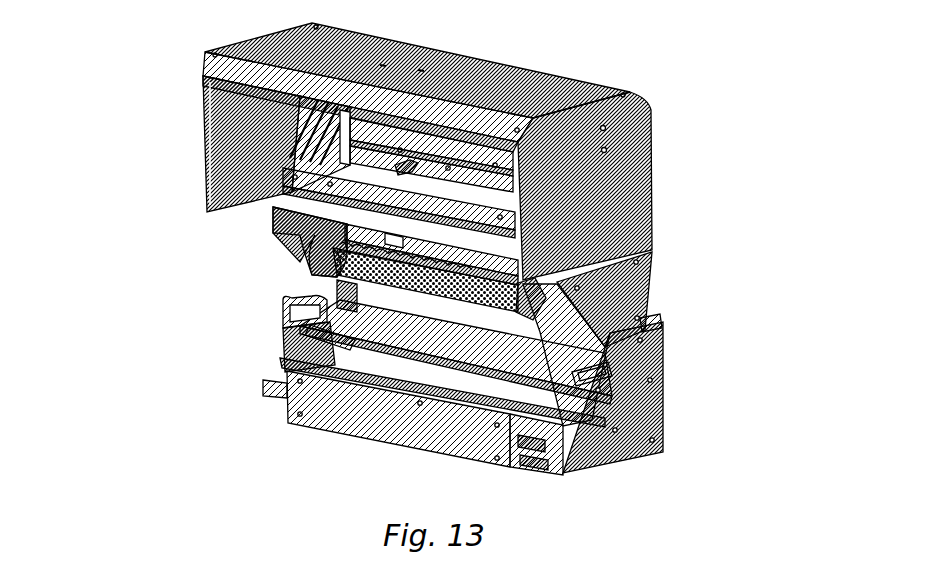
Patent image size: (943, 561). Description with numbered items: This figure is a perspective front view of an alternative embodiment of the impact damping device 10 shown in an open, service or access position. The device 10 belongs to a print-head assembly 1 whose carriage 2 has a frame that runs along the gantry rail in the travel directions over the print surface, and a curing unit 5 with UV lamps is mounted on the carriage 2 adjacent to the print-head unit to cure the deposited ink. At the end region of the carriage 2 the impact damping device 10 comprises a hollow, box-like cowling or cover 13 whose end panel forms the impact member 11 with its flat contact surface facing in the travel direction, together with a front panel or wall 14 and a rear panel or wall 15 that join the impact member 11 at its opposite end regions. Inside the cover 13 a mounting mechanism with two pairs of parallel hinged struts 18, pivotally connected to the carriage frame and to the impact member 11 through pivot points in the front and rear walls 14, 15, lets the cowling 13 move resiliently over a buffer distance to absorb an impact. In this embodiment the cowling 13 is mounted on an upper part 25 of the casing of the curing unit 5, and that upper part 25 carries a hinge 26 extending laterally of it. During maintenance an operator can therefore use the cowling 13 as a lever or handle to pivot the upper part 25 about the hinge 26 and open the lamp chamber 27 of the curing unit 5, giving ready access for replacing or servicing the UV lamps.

The print-head assembly 1 is at (434, 242).
The carriage 2 is at (535, 365).
The curing unit 5 is at (627, 407).
The impact damping device 10 is at (389, 174).
The impact member 11 is at (452, 68).
The cowling or cover 13 is at (427, 141).
The front panel or wall 14 is at (627, 197).
The rear panel or wall 15 is at (203, 158).
The hinged struts 18 is at (300, 125).
The upper part of casing of curing unit 25 is at (640, 288).
The hinge 26 is at (645, 327).
The lamp chamber 27 is at (390, 383).